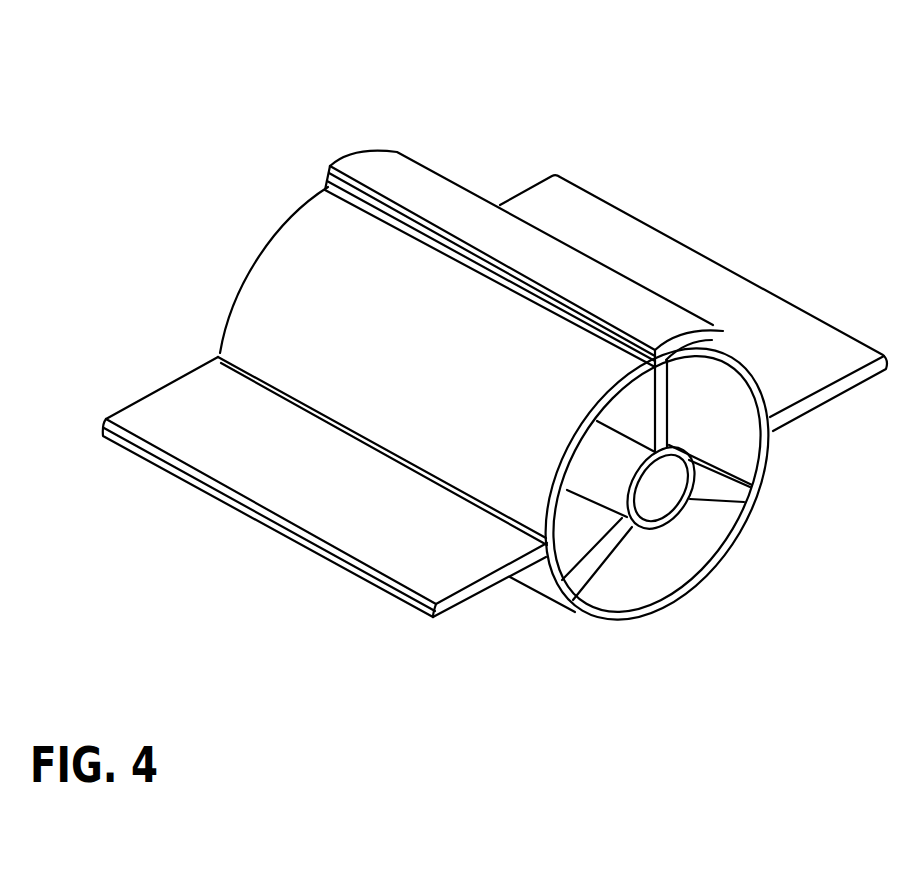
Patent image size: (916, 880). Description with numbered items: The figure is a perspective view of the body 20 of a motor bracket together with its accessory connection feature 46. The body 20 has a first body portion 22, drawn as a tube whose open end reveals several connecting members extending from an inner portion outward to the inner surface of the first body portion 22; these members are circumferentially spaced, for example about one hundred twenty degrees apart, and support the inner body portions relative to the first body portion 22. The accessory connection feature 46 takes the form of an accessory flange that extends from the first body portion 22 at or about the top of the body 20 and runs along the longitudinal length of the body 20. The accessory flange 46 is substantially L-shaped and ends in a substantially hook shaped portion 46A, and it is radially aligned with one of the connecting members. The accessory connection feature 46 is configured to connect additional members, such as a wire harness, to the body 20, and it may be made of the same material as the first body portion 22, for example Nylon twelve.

The body 20 is at (495, 364).
The first body portion 22 is at (276, 279).
The accessory connection feature 46 is at (388, 168).
The hook shaped portion 46A is at (708, 341).